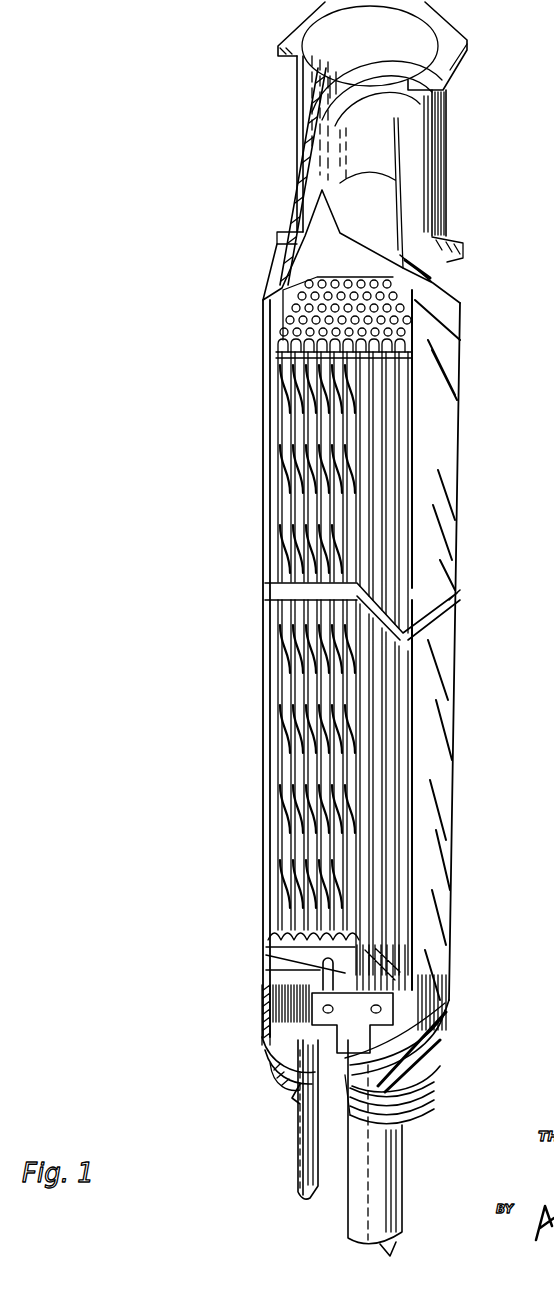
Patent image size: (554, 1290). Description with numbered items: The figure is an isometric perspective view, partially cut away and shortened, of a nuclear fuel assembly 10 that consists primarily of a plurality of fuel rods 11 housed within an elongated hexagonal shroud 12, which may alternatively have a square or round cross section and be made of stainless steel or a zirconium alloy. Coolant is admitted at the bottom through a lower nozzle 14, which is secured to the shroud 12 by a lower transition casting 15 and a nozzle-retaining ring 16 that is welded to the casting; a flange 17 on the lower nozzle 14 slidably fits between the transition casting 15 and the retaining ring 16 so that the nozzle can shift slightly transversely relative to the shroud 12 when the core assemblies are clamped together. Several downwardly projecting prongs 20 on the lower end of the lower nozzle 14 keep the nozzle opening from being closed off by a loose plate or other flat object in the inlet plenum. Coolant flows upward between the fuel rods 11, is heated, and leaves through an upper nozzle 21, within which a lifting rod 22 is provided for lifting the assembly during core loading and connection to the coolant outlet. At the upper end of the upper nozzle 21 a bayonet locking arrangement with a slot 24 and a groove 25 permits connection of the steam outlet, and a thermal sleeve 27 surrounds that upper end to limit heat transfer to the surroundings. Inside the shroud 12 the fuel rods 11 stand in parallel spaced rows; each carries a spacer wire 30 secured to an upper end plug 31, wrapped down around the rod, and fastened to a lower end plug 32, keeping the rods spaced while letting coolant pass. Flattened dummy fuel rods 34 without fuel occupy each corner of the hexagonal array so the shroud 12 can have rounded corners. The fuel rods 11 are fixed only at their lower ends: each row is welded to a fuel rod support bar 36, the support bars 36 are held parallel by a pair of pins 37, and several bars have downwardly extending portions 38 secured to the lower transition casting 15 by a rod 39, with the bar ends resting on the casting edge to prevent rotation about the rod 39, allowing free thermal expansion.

The nuclear fuel assembly 10 is at (460, 487).
The fuel rods 11 is at (393, 428).
The hexagonal shroud 12 is at (462, 416).
The lower nozzle 14 is at (402, 1165).
The lower transition casting 15 is at (268, 1042).
The nozzle-retaining ring 16 is at (274, 1080).
The flange 17 is at (292, 1093).
The prongs 20 is at (304, 1196).
The upper nozzle 21 is at (305, 160).
The lifting rod 22 is at (340, 255).
The slot 24 is at (340, 78).
The groove 25 is at (372, 92).
The thermal sleeve 27 is at (450, 104).
The spacer wire 30 is at (290, 409).
The upper end plug 31 is at (284, 338).
The lower end plug 32 is at (270, 930).
The dummy fuel rods 34 is at (272, 344).
The fuel rod support bar 36 is at (282, 982).
The pins 37 is at (322, 963).
The downwardly extending portions 38 is at (262, 1013).
The rod 39 is at (418, 1108).